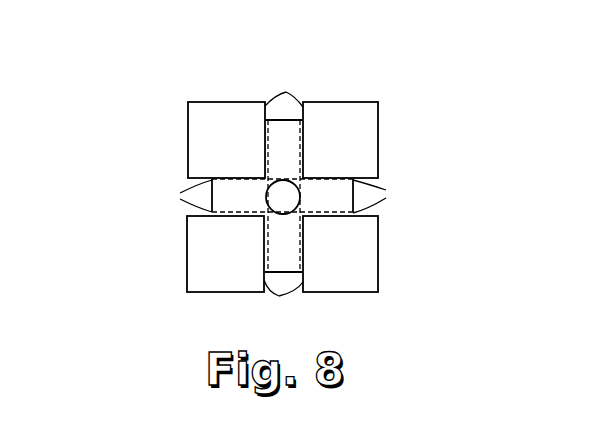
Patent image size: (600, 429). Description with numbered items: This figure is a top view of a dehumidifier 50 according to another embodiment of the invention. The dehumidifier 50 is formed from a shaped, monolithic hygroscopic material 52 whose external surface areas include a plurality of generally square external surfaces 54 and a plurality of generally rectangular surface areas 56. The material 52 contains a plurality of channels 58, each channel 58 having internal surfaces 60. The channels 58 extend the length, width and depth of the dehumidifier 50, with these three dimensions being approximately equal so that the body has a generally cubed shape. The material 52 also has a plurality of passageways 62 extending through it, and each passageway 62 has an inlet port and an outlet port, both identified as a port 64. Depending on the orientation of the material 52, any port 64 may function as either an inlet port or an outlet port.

The dehumidifier 50 is at (399, 107).
The hygroscopic material 52 is at (188, 128).
The square external surfaces 54 is at (346, 159).
The rectangular surface areas 56 is at (378, 270).
The channels 58 is at (271, 94).
The internal surfaces 60 is at (283, 133).
The passageways 62 is at (232, 176).
The port 64 is at (303, 108).